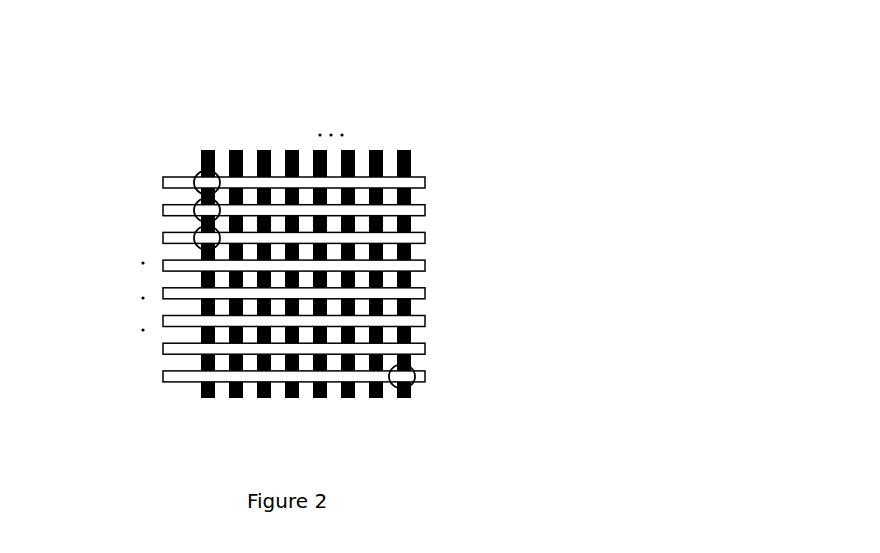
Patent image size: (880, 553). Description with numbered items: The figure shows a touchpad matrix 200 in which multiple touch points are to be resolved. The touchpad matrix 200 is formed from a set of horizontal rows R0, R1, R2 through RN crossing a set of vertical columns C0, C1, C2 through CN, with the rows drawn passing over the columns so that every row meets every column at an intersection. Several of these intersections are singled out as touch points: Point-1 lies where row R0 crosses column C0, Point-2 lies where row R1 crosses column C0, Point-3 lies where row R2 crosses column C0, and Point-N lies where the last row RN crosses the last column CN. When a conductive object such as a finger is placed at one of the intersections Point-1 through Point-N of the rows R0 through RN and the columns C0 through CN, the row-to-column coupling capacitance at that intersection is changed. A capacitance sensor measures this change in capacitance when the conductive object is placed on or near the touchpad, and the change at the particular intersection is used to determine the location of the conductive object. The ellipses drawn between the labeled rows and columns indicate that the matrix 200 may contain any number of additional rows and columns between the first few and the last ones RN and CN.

The touchpad matrix 200 is at (183, 96).
The column C0 is at (207, 258).
The column C1 is at (237, 140).
The column C2 is at (265, 258).
The column CN is at (402, 258).
The row R0 is at (275, 184).
The row R1 is at (275, 210).
The row R2 is at (275, 239).
The row RN is at (271, 377).
The intersection Point-1 is at (193, 178).
The intersection Point-2 is at (193, 207).
The intersection Point-3 is at (193, 235).
The intersection Point-N is at (416, 376).